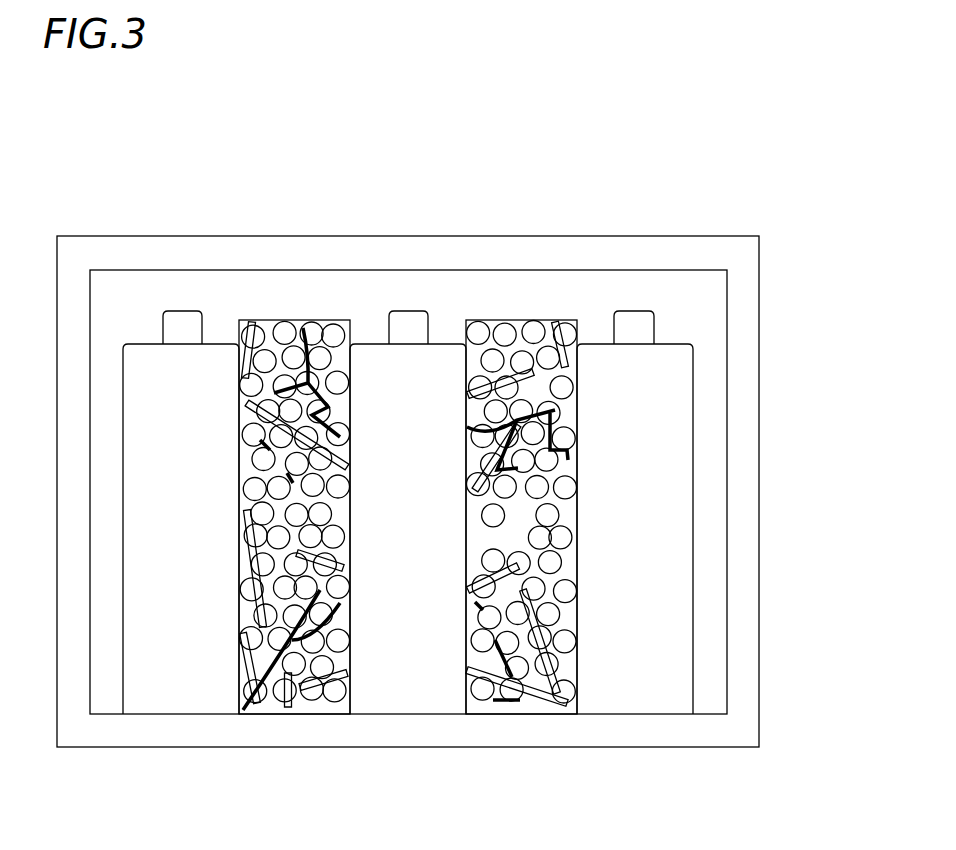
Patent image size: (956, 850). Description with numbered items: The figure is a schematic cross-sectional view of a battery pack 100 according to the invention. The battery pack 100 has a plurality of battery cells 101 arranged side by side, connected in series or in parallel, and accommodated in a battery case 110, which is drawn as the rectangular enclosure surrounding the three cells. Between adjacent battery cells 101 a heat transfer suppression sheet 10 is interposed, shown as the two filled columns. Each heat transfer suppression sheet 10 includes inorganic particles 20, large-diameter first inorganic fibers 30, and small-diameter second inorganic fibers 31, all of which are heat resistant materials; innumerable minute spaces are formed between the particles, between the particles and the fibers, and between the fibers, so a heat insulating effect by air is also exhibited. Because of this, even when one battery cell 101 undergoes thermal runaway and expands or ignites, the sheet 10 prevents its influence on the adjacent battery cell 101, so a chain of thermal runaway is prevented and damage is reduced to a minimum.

The battery pack 100 is at (90, 195).
The battery case 110 is at (745, 328).
The battery cell 101 is at (680, 620).
The heat transfer suppression sheet 10 is at (282, 320).
The inorganic particles 20 is at (340, 712).
The first inorganic fibers 30 is at (283, 712).
The second inorganic fibers 31 is at (254, 712).